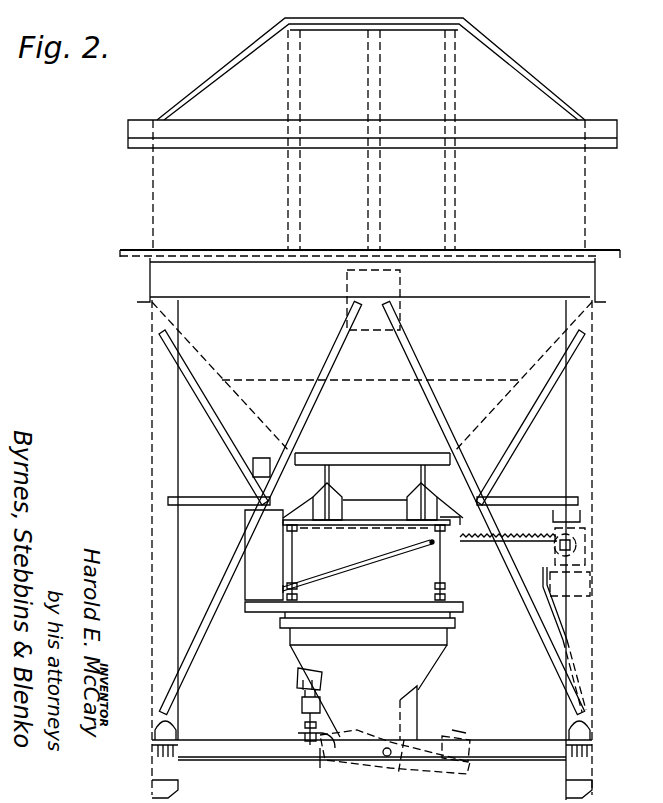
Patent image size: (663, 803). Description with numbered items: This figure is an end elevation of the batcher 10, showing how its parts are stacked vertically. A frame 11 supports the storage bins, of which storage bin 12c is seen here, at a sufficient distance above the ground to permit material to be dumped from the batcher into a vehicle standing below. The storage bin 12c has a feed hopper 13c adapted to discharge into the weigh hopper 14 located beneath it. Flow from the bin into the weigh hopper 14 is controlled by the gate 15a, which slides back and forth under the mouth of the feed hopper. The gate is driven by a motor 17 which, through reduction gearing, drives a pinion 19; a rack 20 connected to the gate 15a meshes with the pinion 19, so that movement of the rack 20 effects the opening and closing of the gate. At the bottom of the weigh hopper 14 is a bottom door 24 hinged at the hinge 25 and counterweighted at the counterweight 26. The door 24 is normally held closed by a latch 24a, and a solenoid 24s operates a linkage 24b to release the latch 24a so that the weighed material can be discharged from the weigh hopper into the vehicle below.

The batcher 10 is at (246, 676).
The frame 11 is at (160, 555).
The storage bin 12c is at (230, 336).
The feed hopper 13c is at (253, 469).
The weigh hopper 14 is at (425, 662).
The gate 15a is at (358, 527).
The motor 17 is at (575, 537).
The pinion 19 is at (580, 545).
The rack 20 is at (522, 527).
The bottom door 24 is at (372, 758).
The latch 24a is at (318, 762).
The linkage 24b is at (303, 728).
The solenoid 24s is at (302, 705).
The hinge 25 is at (398, 757).
The counterweight 26 is at (452, 735).